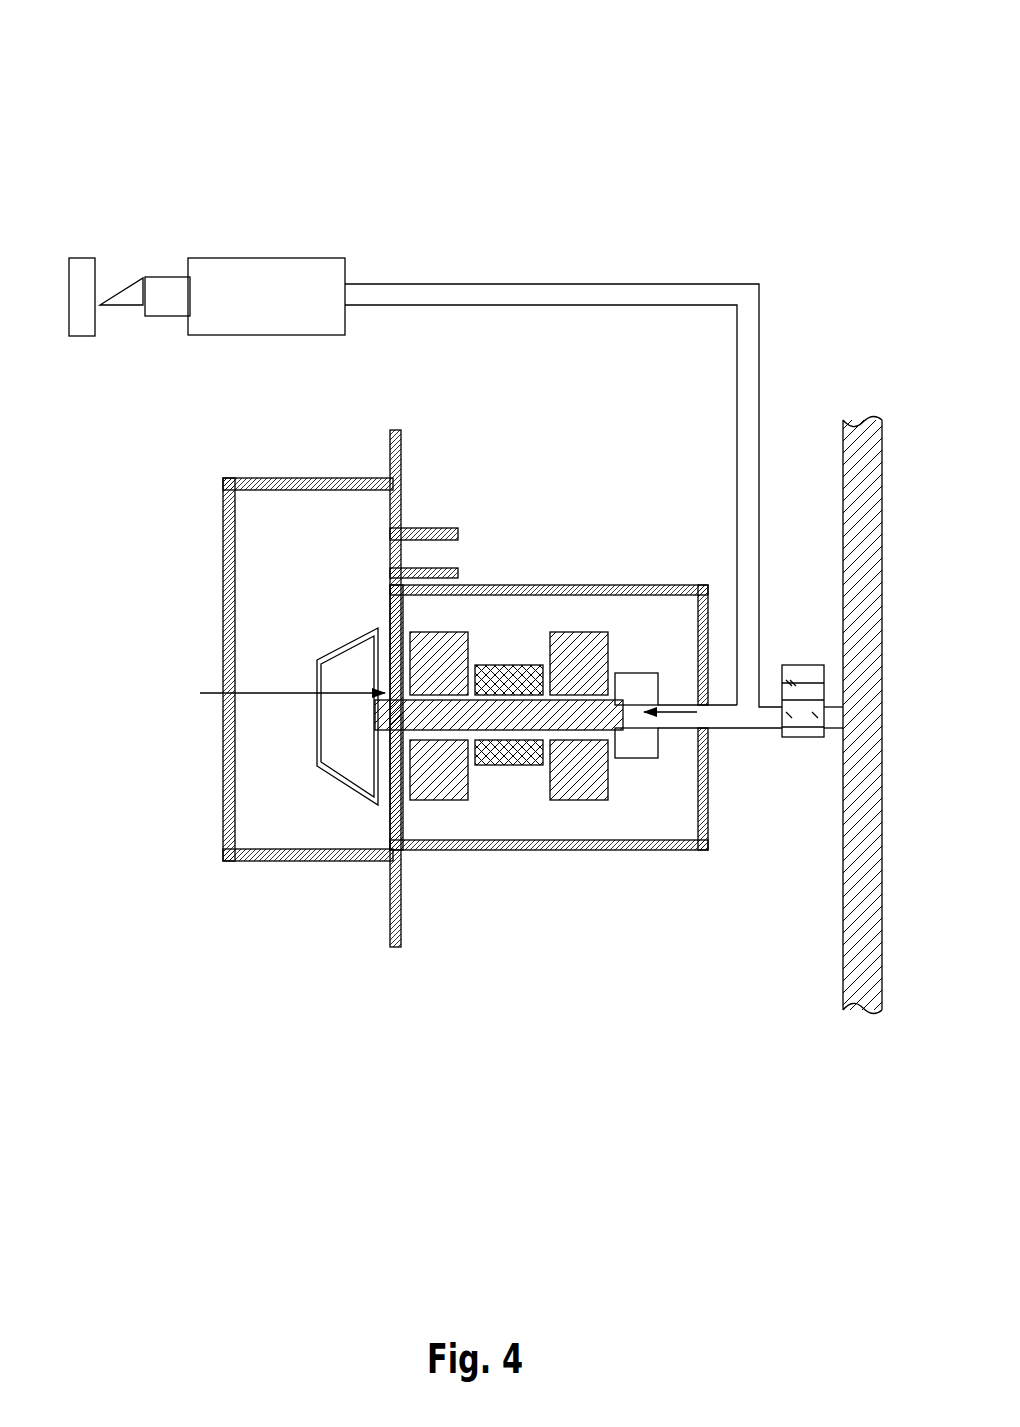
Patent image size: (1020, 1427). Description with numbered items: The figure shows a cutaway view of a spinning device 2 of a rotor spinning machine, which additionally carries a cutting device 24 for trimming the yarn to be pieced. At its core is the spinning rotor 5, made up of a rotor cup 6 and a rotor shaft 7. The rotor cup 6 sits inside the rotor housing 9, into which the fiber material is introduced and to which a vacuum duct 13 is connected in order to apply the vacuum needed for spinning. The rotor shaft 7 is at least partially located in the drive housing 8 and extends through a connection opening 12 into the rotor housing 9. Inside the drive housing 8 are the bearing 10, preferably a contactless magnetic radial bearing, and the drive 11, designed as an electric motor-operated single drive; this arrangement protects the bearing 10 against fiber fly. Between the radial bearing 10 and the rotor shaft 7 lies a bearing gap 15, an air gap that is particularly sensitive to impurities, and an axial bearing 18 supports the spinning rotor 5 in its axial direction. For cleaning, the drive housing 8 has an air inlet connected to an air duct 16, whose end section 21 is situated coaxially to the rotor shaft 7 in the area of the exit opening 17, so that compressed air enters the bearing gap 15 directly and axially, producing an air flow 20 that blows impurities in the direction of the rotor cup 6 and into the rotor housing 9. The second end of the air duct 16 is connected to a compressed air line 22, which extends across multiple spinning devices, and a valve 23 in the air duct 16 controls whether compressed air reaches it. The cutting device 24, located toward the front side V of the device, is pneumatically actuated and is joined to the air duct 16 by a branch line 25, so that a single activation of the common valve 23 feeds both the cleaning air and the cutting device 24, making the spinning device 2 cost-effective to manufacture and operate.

The spinning device 2 is at (413, 186).
The cutting device 24 is at (234, 277).
The branch line 25 is at (563, 438).
The rotor housing 9 is at (302, 738).
The vacuum duct 13 is at (424, 642).
The drive housing 8 is at (549, 634).
The bearing 10 is at (518, 597).
The drive 11 is at (530, 596).
The spinning rotor 5 is at (517, 740).
The rotor shaft 7 is at (517, 572).
The bearing gap 15 is at (517, 572).
The exit opening 17 is at (652, 690).
The axial bearing 18 is at (721, 577).
The end section 21 is at (652, 870).
The air flow 20 is at (720, 843).
The air duct 16 is at (715, 777).
The valve 23 is at (812, 640).
The compressed air line 22 is at (814, 756).
The rotor cup 6 is at (319, 813).
The connection opening 12 is at (280, 745).
The front side V is at (346, 972).